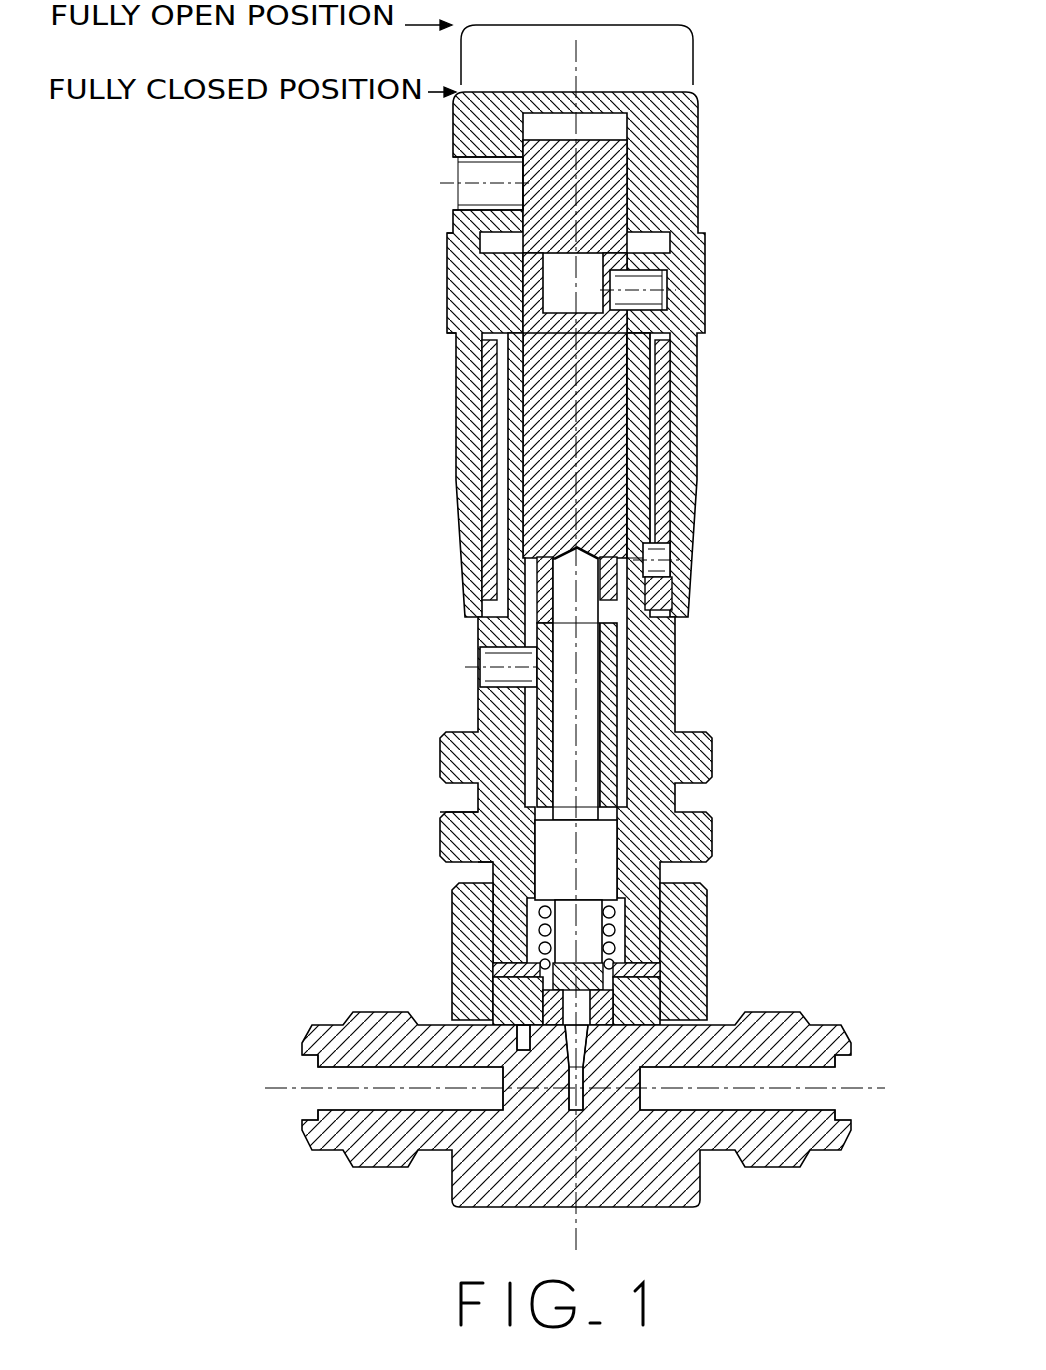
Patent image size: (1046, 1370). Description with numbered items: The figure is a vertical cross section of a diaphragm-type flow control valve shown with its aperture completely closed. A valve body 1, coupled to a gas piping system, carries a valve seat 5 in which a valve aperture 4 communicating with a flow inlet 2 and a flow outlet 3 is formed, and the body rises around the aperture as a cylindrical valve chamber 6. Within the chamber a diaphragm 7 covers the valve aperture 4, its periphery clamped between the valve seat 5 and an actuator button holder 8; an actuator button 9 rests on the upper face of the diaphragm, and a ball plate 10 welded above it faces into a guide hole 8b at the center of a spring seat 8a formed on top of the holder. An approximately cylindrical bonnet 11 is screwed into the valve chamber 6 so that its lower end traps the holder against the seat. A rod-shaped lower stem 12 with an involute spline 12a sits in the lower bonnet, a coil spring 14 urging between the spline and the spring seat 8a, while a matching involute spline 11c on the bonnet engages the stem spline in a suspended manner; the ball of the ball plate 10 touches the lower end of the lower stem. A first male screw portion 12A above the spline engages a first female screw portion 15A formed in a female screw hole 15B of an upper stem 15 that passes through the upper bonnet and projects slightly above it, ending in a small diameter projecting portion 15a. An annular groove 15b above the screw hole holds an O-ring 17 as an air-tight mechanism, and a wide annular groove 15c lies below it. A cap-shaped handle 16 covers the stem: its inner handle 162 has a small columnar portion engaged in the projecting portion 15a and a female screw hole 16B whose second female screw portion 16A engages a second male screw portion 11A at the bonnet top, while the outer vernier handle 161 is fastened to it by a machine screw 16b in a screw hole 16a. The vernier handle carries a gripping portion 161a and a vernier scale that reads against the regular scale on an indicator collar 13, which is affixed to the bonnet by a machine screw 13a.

The valve body 1 is at (462, 1198).
The flow inlet 2 is at (307, 1075).
The flow outlet 3 is at (822, 1085).
The valve aperture 4 is at (590, 1037).
The valve seat 5 is at (503, 1042).
The valve chamber 6 is at (462, 916).
The diaphragm 7 is at (558, 1000).
The actuator button holder 8 is at (507, 1008).
The spring seat 8a is at (524, 971).
The guide hole 8b is at (612, 975).
The actuator button 9 is at (670, 1010).
The ball plate 10 is at (690, 975).
The bonnet 11 is at (490, 763).
The second male screw portion 11A is at (650, 432).
The involute spline 11c is at (528, 836).
The lower stem 12 is at (598, 765).
The involute spline 12a is at (600, 860).
The first male screw portion 12A is at (604, 725).
The indicator collar 13 is at (668, 605).
The machine screw 13a is at (665, 553).
The coil spring 14 is at (612, 920).
The upper stem 15 is at (547, 478).
The small diameter projecting portion 15a is at (600, 287).
The annular groove 15b is at (522, 589).
The female screw hole 15B is at (533, 652).
The wide annular groove 15c is at (515, 720).
The first female screw portion 15A is at (608, 695).
The handle 16 is at (830, 110).
The screw hole 16a is at (478, 200).
The machine screw 16b is at (478, 170).
The second female screw portion 16A is at (645, 387).
The female screw hole 16B is at (495, 350).
The vernier handle 161 is at (670, 135).
The gripping portion 161a is at (457, 287).
The inner handle 162 is at (623, 183).
The O-ring 17 is at (620, 588).